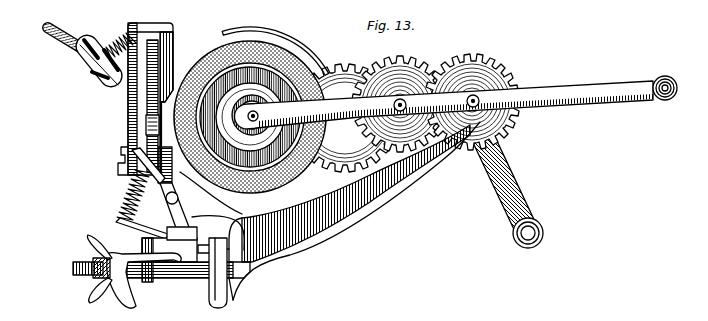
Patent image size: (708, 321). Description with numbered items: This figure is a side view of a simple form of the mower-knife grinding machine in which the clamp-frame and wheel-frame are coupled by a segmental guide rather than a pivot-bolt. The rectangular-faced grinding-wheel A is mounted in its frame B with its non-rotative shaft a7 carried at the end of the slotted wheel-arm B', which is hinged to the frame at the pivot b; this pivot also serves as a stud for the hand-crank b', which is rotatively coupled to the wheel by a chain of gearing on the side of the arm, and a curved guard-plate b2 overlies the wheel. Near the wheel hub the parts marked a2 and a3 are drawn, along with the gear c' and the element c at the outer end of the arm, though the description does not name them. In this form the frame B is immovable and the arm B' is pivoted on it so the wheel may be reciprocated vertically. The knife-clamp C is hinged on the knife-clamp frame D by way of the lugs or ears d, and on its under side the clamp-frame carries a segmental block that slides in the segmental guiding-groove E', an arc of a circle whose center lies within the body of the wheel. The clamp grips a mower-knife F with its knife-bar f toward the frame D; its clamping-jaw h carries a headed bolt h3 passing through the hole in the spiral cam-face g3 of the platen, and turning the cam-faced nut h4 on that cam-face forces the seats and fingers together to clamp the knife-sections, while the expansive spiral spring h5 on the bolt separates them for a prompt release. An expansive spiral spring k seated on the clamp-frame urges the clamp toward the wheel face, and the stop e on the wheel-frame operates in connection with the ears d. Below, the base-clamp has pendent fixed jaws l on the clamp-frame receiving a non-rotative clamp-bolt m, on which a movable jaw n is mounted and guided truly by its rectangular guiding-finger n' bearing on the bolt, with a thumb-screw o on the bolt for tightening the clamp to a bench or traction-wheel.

The grinding-wheel A is at (250, 118).
The wheel-frame B is at (354, 211).
The wheel-arm B' is at (444, 105).
The knife-clamp C is at (148, 87).
The knife-clamp frame D is at (182, 234).
The segmental guiding-groove E' is at (202, 276).
The mower-knife F is at (163, 48).
The block a2 is at (171, 165).
The hub a3 is at (227, 145).
The non-rotative wheel shaft a7 is at (262, 113).
The pivot b is at (475, 100).
The hand-crank b' is at (501, 176).
The curved guard-plate b2 is at (275, 43).
The ball handle c is at (665, 79).
The gear wheel c' is at (345, 124).
The lugs or ears d is at (172, 212).
The stop e is at (212, 211).
The knife-bar f is at (150, 128).
The spiral cam-face g3 is at (96, 38).
The clamping-jaw h is at (150, 19).
The headed bolt h3 is at (85, 74).
The cam-faced nut h4 is at (61, 40).
The expansive spiral spring h5 is at (120, 37).
The expansive spiral spring k is at (135, 204).
The fixed jaws l is at (218, 273).
The clamp-bolt m is at (76, 269).
The movable jaw n is at (144, 286).
The guiding-finger n' is at (180, 281).
The thumb-screw o is at (94, 272).